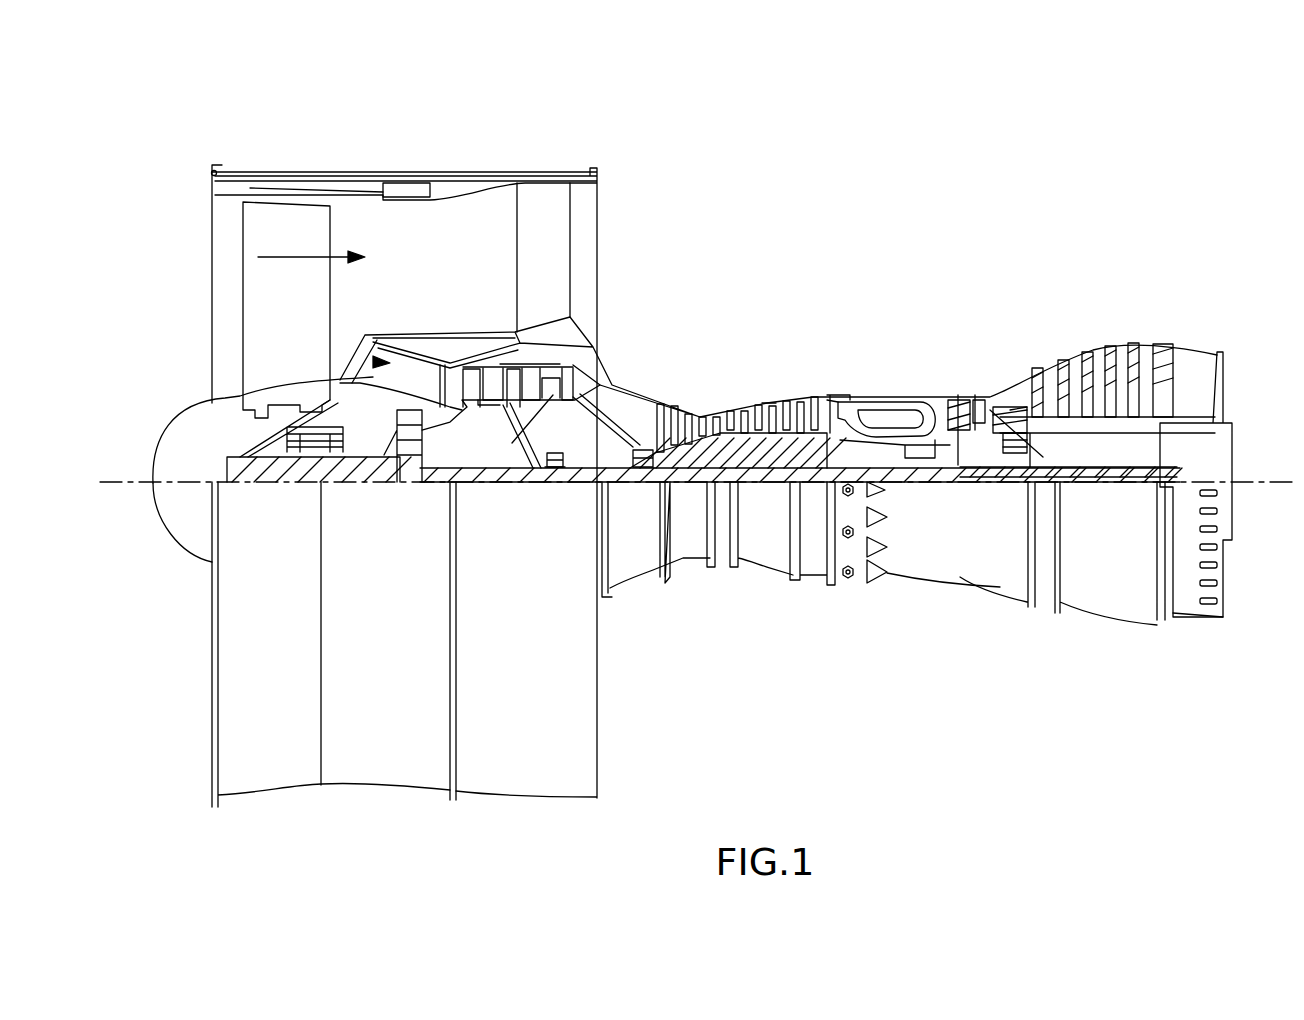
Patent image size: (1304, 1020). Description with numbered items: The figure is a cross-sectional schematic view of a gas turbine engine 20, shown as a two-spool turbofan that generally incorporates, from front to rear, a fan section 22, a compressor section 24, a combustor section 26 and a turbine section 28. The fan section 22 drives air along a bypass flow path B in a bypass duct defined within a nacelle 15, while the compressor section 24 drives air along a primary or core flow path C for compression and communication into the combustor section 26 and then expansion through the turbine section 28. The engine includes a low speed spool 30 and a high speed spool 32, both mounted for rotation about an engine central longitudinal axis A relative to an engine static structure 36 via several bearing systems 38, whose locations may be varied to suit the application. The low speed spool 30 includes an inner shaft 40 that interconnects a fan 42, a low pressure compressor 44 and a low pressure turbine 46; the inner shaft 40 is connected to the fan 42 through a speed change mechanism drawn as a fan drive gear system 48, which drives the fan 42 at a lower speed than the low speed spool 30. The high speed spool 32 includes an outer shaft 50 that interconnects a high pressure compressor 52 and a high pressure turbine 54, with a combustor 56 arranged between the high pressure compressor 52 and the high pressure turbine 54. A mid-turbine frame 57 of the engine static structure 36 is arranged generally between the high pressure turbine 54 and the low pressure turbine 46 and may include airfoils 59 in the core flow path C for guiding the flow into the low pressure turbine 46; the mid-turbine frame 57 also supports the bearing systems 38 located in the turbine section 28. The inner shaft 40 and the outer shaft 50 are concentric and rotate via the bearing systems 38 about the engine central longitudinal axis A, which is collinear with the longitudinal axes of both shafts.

The gas turbine engine 20 is at (930, 180).
The fan section 22 is at (320, 160).
The nacelle 15 is at (401, 188).
The fan 42 is at (289, 297).
The compressor section 24 is at (660, 360).
The combustor section 26 is at (898, 350).
The turbine section 28 is at (1055, 318).
The low speed spool 30 is at (767, 520).
The high speed spool 32 is at (822, 440).
The engine static structure 36 is at (813, 555).
The bearing systems 38 is at (556, 484).
The inner shaft 40 is at (623, 484).
The low pressure compressor 44 is at (545, 386).
The low pressure turbine 46 is at (1095, 363).
The fan drive gear system 48 is at (412, 484).
The outer shaft 50 is at (888, 472).
The high pressure compressor 52 is at (770, 412).
The high pressure turbine 54 is at (960, 393).
The combustor 56 is at (905, 410).
The mid-turbine frame 57 is at (1012, 370).
The airfoils 59 is at (1012, 414).
The engine central longitudinal axis A is at (1281, 482).
The bypass flow path B is at (292, 254).
The core flow path C is at (375, 360).